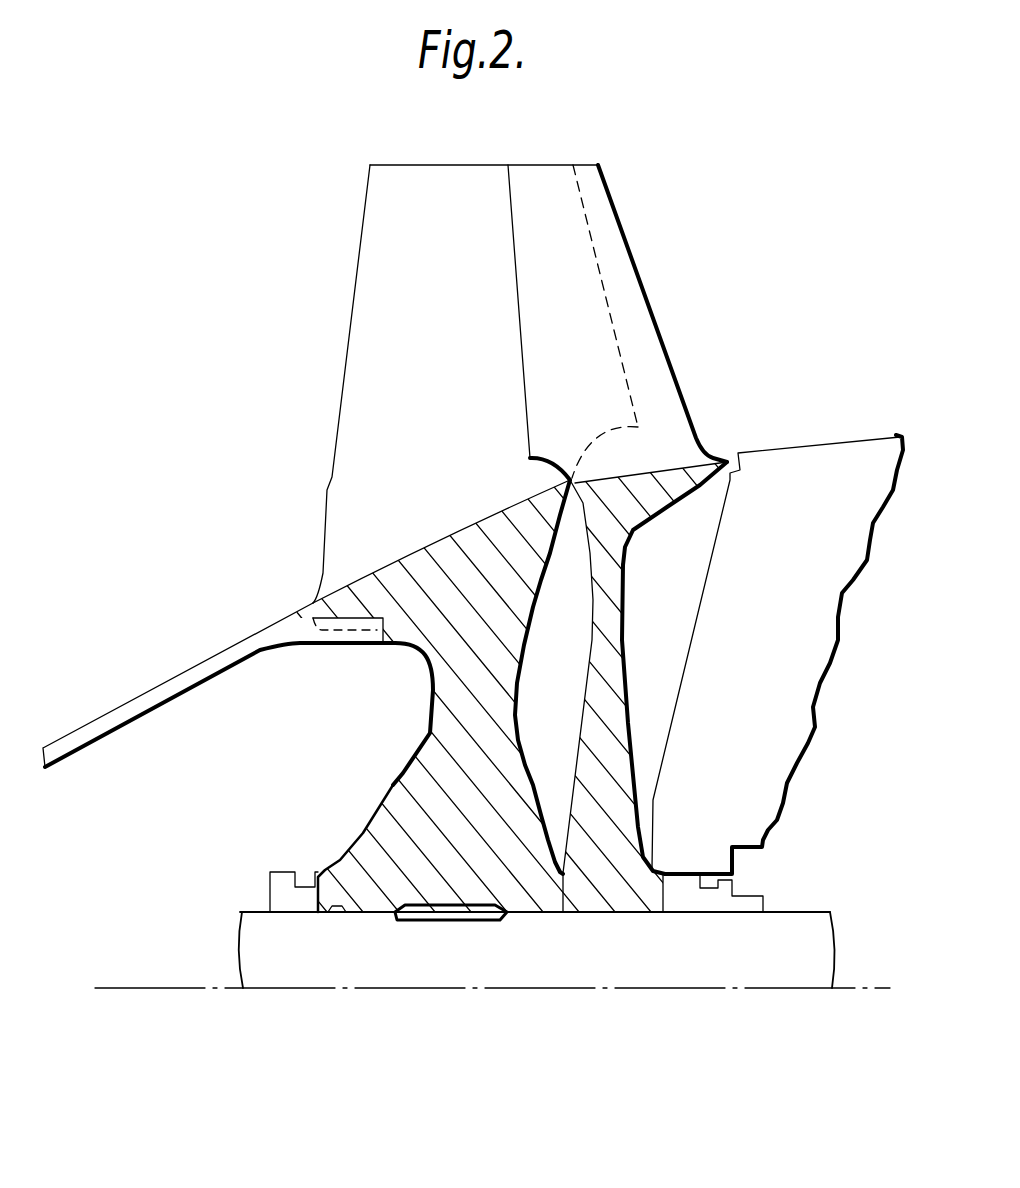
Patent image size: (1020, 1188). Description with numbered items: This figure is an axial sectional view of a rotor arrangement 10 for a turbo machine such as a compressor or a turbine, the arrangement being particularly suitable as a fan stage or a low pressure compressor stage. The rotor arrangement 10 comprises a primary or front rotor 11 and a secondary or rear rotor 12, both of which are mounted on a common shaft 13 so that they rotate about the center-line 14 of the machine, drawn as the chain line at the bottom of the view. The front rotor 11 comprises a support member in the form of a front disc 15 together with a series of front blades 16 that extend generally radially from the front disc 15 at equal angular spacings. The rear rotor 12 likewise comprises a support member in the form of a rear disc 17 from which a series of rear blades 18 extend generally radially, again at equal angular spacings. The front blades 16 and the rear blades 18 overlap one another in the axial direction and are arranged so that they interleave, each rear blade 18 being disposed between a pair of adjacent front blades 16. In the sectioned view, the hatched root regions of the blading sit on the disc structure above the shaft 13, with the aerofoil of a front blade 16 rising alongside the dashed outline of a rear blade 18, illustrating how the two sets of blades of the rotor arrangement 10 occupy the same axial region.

The rotor arrangement 10 is at (146, 763).
The front rotor 11 is at (306, 530).
The rear rotor 12 is at (714, 440).
The shaft 13 is at (505, 940).
The center-line 14 is at (393, 990).
The front disc 15 is at (445, 757).
The front blades 16 is at (383, 283).
The rear disc 17 is at (608, 780).
The rear blades 18 is at (613, 278).